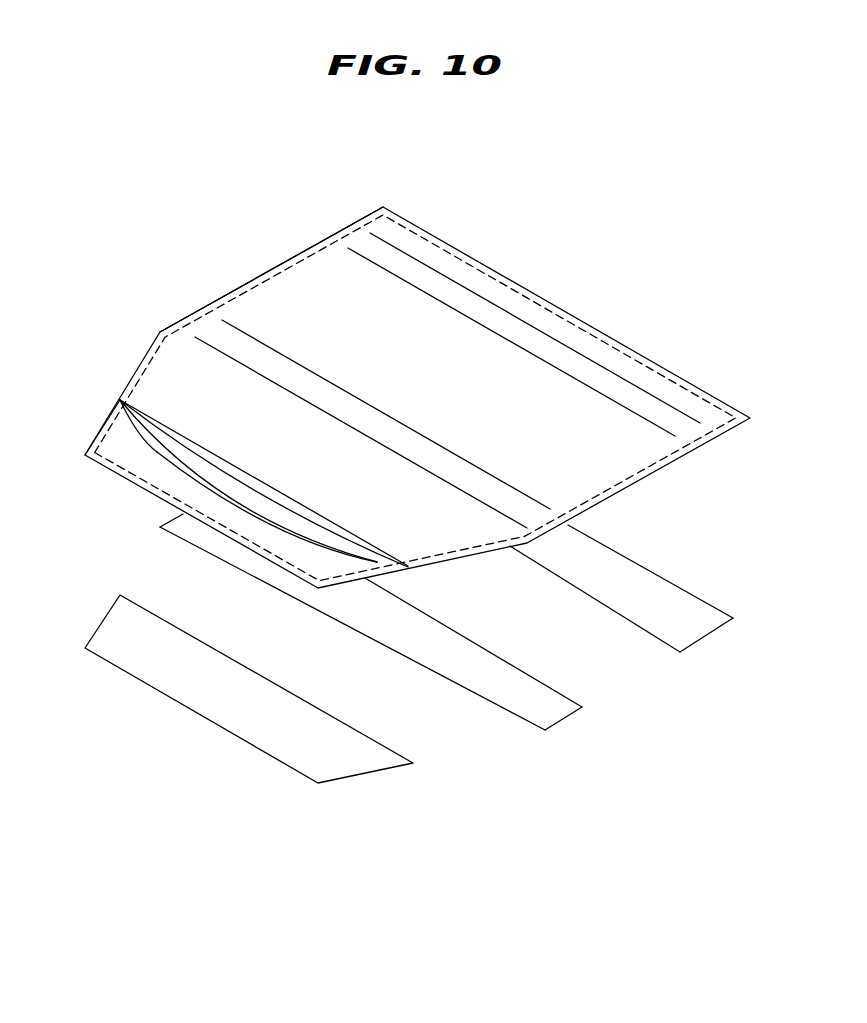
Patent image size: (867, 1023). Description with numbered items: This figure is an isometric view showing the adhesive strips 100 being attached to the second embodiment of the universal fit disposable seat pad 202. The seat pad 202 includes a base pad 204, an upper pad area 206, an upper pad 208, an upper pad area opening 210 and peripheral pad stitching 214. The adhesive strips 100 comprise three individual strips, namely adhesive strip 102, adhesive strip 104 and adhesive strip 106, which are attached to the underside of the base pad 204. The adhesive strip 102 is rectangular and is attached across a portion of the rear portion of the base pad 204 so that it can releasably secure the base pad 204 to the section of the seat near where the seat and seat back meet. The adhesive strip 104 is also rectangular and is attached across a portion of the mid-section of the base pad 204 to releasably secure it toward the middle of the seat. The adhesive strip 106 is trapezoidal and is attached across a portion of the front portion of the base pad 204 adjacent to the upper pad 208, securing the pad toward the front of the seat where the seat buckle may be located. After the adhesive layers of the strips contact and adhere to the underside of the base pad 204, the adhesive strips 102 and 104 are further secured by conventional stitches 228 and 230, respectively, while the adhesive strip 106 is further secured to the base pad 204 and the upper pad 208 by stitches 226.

The adhesive strips 100 is at (653, 741).
The adhesive strip 102 is at (679, 612).
The adhesive strip 104 is at (527, 700).
The adhesive strip 106 is at (350, 762).
The universal fit disposable seat pad 202 is at (628, 274).
The base pad 204 is at (365, 245).
The upper pad area 206 is at (128, 447).
The upper pad 208 is at (262, 481).
The upper pad area opening 210 is at (243, 515).
The peripheral pad stitching 214 is at (298, 257).
The stitches 226 is at (212, 462).
The stitches 228 is at (418, 292).
The stitches 230 is at (357, 430).